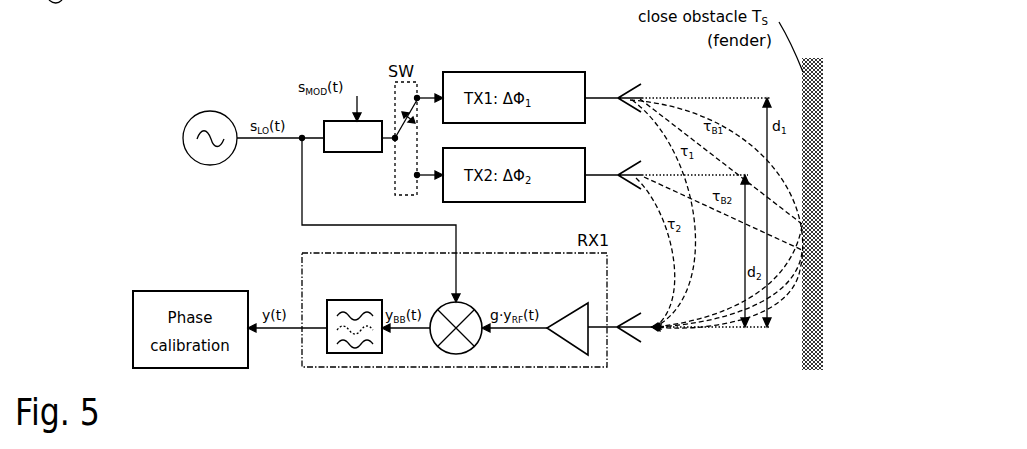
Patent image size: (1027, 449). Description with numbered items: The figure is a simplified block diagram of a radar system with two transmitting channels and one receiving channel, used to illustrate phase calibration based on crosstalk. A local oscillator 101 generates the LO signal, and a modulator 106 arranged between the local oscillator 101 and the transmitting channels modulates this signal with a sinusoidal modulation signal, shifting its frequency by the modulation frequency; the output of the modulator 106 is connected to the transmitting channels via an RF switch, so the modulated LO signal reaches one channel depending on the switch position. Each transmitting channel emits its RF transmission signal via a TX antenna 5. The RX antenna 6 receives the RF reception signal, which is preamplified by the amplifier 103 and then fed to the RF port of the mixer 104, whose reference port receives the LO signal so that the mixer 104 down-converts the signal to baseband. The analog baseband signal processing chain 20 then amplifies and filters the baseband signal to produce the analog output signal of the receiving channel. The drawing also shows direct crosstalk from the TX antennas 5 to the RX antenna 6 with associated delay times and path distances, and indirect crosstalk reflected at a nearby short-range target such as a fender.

The local oscillator 101 is at (237, 101).
The modulator 106 is at (349, 153).
The TX antenna 5 is at (630, 86).
The RX antenna 6 is at (629, 316).
The amplifier 103 is at (566, 316).
The mixer 104 is at (474, 312).
The analog baseband signal processing chain 20 is at (345, 300).